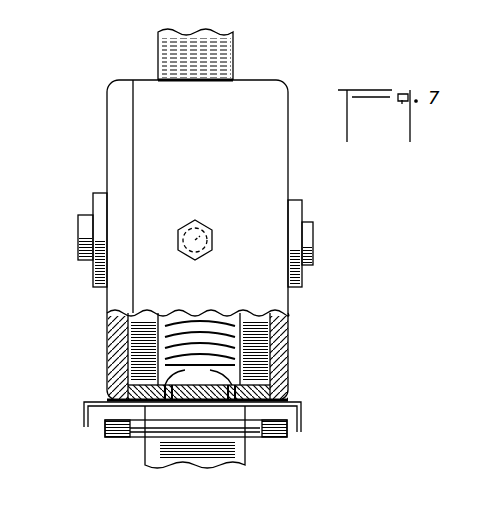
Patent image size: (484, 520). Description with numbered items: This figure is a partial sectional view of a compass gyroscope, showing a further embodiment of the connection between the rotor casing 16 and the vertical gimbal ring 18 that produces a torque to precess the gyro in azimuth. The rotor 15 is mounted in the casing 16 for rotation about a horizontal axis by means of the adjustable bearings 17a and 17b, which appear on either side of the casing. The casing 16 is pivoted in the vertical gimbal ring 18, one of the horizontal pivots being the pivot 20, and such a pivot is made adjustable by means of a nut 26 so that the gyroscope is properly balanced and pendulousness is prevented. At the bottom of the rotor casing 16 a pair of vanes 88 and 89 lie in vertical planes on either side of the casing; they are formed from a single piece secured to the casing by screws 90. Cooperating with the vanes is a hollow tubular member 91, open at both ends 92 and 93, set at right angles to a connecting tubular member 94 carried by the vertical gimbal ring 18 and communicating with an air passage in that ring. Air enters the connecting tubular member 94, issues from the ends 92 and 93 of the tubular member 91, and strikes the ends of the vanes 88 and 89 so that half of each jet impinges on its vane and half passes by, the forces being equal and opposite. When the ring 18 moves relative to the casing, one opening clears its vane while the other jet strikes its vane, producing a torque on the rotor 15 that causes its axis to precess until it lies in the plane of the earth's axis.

The rotor 15 is at (288, 330).
The casing 16 is at (288, 362).
The adjustable bearing 17a is at (78, 238).
The adjustable bearing 17b is at (313, 245).
The vertical gimbal ring 18 is at (233, 56).
The pivot 20 is at (205, 228).
The nut 26 is at (214, 248).
The vane 88 is at (78, 415).
The vane 89 is at (303, 418).
The screw 90 is at (198, 375).
The hollow tubular member 91 is at (148, 430).
The open end 92 is at (112, 437).
The open end 93 is at (283, 437).
The connecting tubular member 94 is at (175, 440).